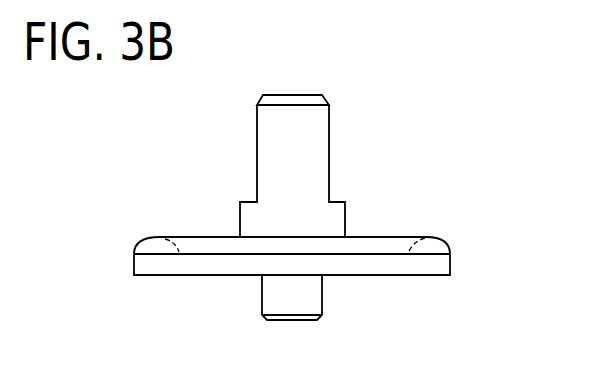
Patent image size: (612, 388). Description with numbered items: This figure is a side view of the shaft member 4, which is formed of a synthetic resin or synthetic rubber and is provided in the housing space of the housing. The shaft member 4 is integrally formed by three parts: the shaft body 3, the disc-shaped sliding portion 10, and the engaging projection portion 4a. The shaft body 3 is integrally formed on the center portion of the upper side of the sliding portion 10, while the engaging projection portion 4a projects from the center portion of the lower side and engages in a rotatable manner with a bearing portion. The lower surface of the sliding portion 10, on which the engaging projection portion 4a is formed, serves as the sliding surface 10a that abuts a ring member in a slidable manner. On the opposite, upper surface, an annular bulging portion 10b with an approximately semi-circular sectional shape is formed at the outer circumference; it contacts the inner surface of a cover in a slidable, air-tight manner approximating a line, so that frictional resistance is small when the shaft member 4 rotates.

The shaft body 3 is at (314, 130).
The shaft member 4 is at (413, 148).
The engaging projection portion 4a is at (313, 298).
The sliding portion 10 is at (438, 265).
The sliding surface 10a is at (405, 275).
The bulging portion 10b is at (437, 237).